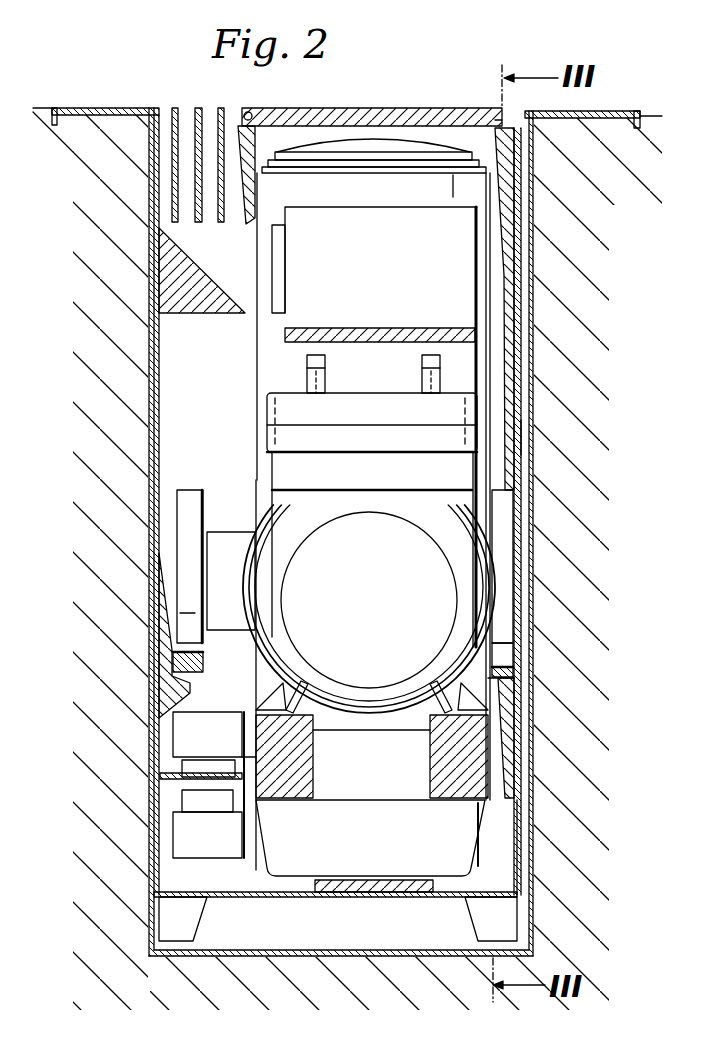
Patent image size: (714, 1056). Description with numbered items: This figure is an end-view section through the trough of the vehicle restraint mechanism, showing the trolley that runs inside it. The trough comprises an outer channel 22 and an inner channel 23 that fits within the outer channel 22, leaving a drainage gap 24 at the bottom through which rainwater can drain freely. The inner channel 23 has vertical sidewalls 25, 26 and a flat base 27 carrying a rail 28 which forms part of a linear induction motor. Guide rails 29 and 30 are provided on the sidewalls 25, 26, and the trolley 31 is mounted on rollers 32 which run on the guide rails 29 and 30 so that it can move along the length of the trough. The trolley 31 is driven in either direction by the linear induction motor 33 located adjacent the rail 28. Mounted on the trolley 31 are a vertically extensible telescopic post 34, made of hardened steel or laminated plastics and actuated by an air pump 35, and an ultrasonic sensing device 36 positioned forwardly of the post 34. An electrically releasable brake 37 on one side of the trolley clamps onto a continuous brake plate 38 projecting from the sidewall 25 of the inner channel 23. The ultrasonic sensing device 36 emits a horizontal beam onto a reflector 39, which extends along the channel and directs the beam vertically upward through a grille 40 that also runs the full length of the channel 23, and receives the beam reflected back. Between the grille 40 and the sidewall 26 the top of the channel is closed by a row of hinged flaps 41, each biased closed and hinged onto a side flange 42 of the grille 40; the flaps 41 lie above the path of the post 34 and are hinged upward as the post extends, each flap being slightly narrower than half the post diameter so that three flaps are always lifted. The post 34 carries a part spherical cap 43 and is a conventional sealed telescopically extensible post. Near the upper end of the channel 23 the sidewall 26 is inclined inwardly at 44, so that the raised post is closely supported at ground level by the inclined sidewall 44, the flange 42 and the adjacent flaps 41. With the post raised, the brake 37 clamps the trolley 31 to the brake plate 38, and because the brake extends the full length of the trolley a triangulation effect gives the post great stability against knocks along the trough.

The outer channel 22 is at (531, 218).
The inner channel 23 is at (530, 385).
The drainage gap 24 is at (288, 932).
The sidewall 25 is at (158, 441).
The sidewall 26 is at (526, 437).
The flat base 27 is at (178, 886).
The rail 28 is at (415, 880).
The guide rail 29 is at (172, 655).
The guide rail 30 is at (515, 658).
The trolley 31 is at (497, 567).
The rollers 32 is at (192, 525).
The linear induction motor 33 is at (360, 851).
The telescopic post 34 is at (490, 292).
The air pump 35 is at (486, 702).
The ultrasonic sensing device 36 is at (393, 284).
The electrically releasable brake 37 is at (172, 826).
The brake plate 38 is at (170, 775).
The reflector 39 is at (198, 262).
The grille 40 is at (192, 99).
The hinged flaps 41 is at (306, 110).
The side flange 42 is at (243, 141).
The part spherical cap 43 is at (394, 135).
The inclined sidewall 44 is at (494, 143).